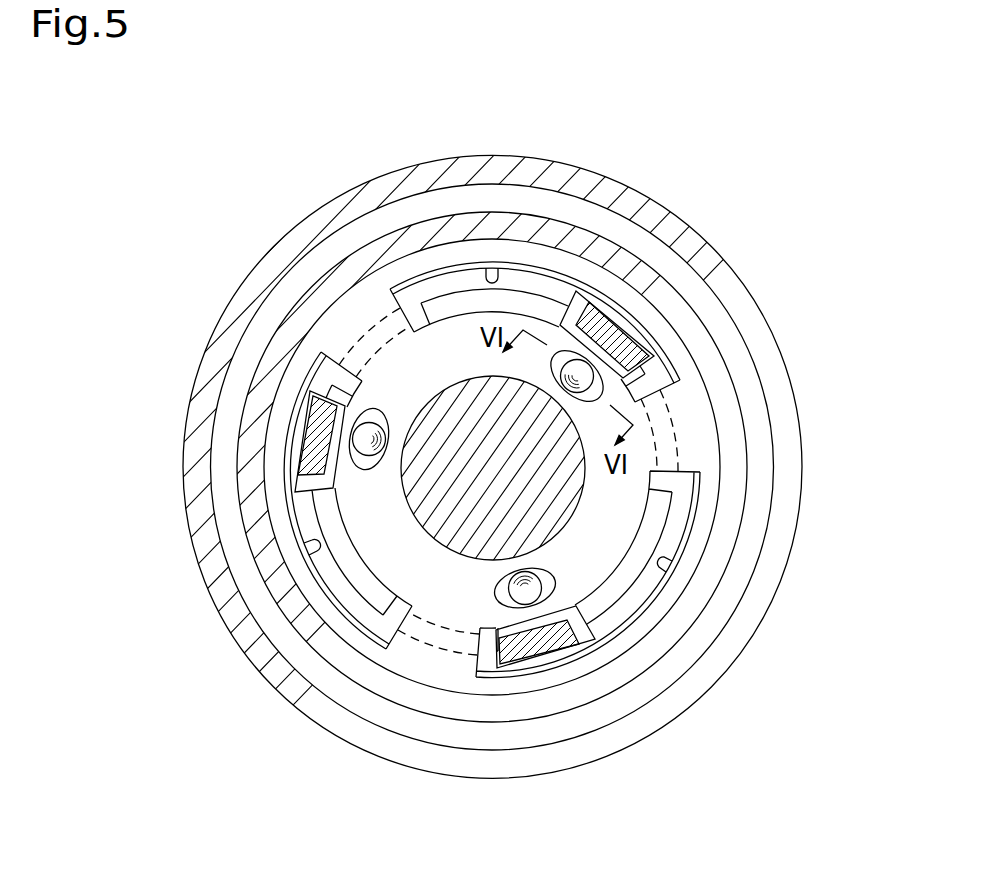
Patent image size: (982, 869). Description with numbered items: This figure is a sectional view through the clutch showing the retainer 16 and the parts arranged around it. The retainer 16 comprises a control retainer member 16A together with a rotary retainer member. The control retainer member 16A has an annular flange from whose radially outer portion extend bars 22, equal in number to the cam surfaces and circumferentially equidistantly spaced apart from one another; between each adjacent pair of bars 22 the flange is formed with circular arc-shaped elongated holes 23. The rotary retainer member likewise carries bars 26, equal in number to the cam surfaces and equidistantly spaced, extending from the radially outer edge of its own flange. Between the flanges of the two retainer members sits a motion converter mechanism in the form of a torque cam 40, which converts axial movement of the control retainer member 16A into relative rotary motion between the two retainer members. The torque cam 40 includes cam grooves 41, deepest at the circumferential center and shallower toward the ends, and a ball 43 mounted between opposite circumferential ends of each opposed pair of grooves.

The retainer 16 is at (323, 308).
The control retainer member 16A is at (296, 343).
The bars 22 is at (373, 322).
The circular arc-shaped elongated holes 23 is at (493, 269).
The bars 26 is at (618, 328).
The torque cam 40 is at (590, 355).
The cam grooves 41 is at (557, 353).
The ball 43 is at (594, 372).